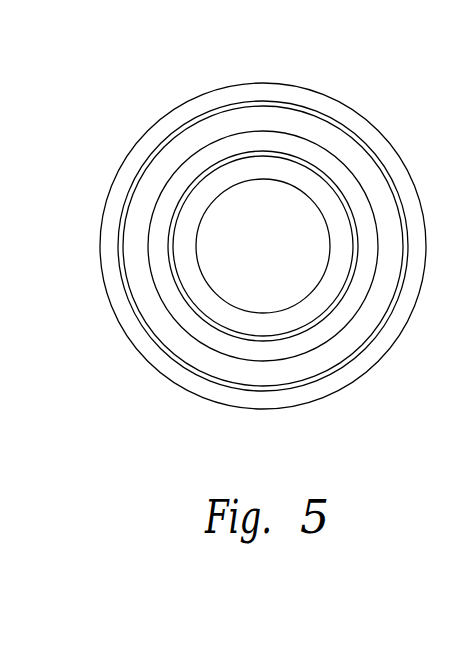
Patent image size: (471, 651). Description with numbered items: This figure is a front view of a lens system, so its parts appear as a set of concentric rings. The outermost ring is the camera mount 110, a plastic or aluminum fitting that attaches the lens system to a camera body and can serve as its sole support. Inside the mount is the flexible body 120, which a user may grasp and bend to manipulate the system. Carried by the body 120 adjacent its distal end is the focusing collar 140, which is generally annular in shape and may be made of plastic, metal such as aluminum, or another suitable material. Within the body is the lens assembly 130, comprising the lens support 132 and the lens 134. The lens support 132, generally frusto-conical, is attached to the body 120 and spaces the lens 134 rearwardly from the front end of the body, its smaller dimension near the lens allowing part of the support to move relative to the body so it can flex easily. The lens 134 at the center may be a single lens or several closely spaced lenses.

The camera mount 110 is at (175, 123).
The flexible body 120 is at (193, 327).
The lens assembly 130 is at (329, 205).
The lens support 132 is at (320, 303).
The lens 134 is at (293, 275).
The focusing collar 140 is at (323, 135).